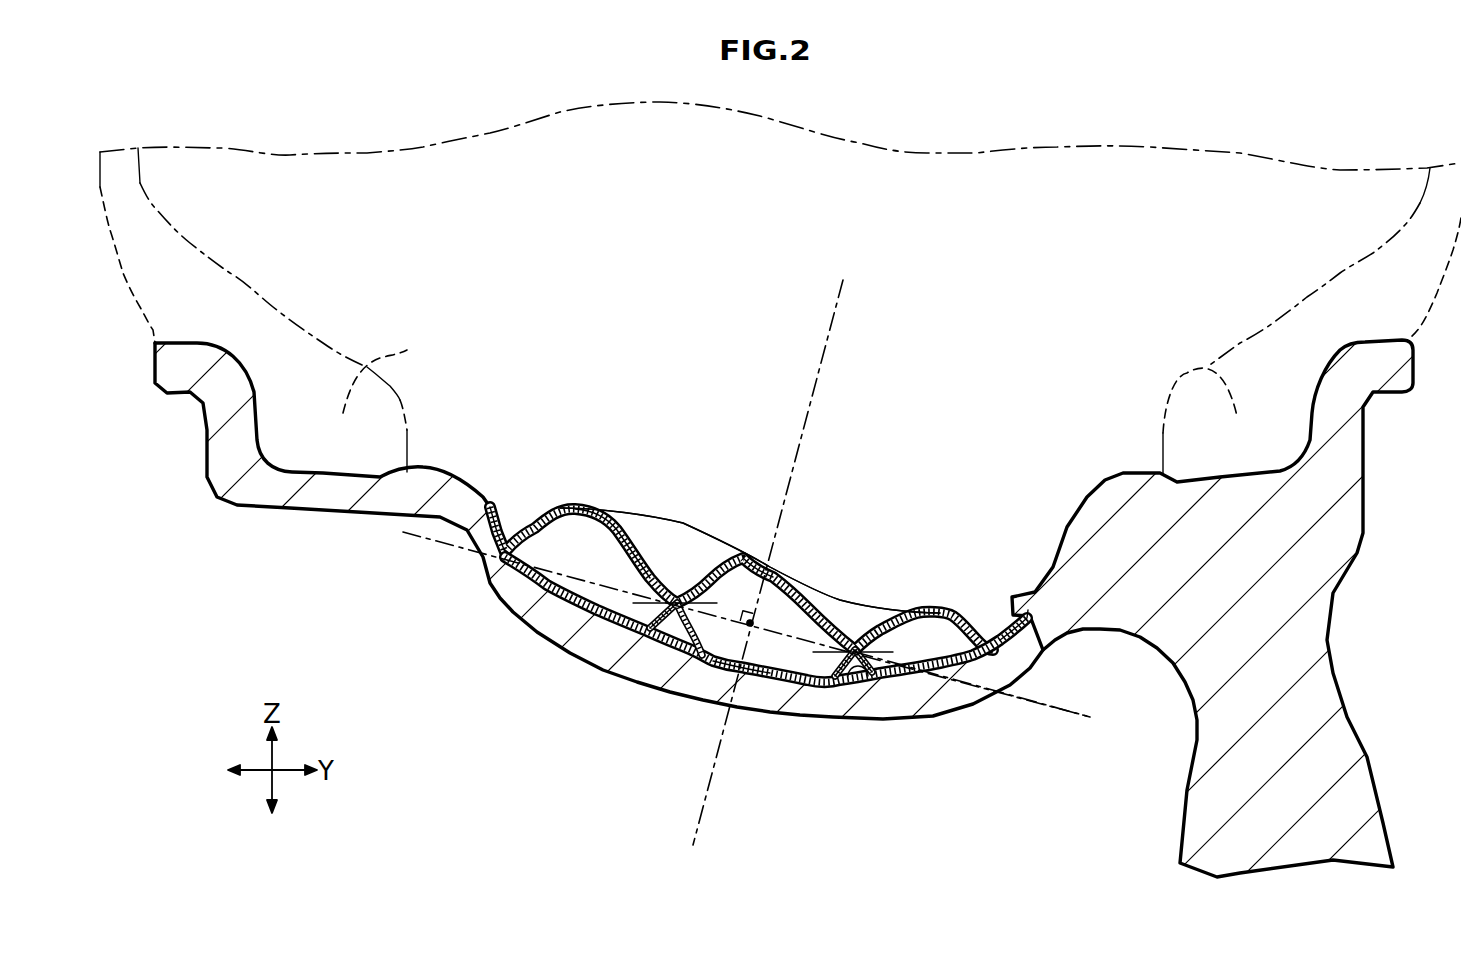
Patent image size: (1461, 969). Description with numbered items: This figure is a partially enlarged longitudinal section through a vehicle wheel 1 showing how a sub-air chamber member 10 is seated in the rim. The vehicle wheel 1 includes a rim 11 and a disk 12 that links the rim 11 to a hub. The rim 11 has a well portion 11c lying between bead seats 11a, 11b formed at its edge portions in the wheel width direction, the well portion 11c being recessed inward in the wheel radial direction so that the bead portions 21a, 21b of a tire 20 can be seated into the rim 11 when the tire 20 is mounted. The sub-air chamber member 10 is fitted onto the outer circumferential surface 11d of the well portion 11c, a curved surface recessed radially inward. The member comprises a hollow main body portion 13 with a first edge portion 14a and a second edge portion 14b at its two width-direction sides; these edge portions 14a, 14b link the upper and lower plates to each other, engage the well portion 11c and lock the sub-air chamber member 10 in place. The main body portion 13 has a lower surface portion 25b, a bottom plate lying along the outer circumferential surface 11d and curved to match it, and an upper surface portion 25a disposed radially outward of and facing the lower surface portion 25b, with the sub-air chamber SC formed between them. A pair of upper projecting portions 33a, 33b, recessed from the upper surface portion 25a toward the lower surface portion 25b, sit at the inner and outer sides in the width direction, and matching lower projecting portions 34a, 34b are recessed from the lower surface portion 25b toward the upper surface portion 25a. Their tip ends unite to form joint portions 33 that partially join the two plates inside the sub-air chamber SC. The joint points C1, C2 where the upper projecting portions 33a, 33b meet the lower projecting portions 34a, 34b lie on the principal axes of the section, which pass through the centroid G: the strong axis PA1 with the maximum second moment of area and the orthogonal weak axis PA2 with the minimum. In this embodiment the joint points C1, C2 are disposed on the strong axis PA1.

The vehicle wheel 1 is at (1390, 442).
The sub-air chamber member 10 is at (840, 583).
The rim 11 is at (207, 433).
The bead seat 11a is at (1233, 477).
The bead seat 11b is at (320, 477).
The well portion 11c is at (1023, 559).
The outer circumferential surface 11d is at (868, 712).
The disk 12 is at (1363, 780).
The main body portion 13 is at (683, 527).
The first edge portion 14a is at (1020, 615).
The second edge portion 14b is at (492, 505).
The tire 20 is at (257, 287).
The bead portion 21a is at (1207, 367).
The bead portion 21b is at (407, 350).
The upper surface portion 25a is at (750, 580).
The lower surface portion 25b is at (740, 663).
The joint portion 33 is at (655, 600).
The upper projecting portion 33a is at (647, 523).
The upper projecting portion 33b is at (827, 653).
The lower projecting portion 34a is at (660, 607).
The lower projecting portion 34b is at (817, 663).
The joint point C1 is at (677, 603).
The joint point C2 is at (855, 650).
The centroid G is at (752, 622).
The sub-air chamber SC is at (785, 659).
The strong axis PA1 is at (1068, 714).
The weak axis PA2 is at (837, 317).